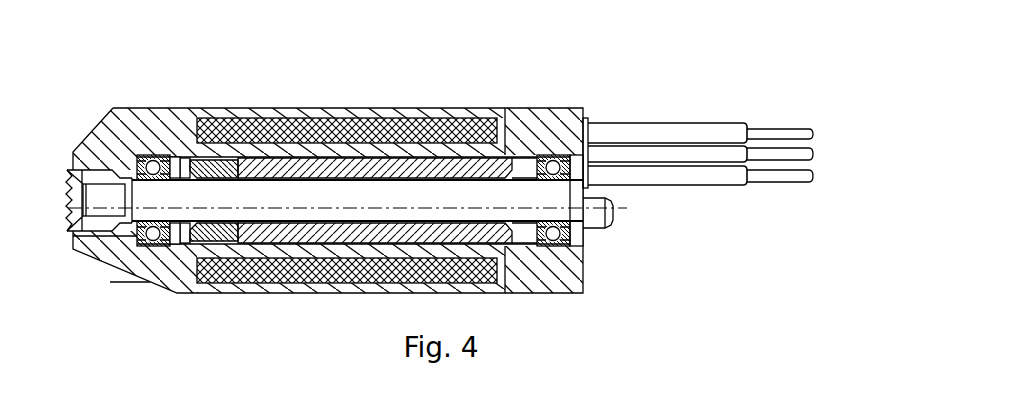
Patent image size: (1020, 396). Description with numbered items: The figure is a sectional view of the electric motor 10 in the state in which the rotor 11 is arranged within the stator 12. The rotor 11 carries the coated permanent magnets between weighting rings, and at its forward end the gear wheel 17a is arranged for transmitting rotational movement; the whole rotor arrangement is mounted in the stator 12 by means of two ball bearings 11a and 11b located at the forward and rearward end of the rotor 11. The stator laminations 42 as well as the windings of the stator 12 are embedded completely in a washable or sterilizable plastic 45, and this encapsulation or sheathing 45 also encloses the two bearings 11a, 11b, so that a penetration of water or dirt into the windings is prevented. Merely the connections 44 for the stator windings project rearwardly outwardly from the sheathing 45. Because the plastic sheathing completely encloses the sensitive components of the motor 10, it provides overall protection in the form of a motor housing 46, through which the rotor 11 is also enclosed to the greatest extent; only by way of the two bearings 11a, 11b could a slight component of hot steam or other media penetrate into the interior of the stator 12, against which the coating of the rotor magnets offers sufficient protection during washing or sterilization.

The electric motor 10 is at (447, 106).
The rotor 11 is at (340, 201).
The ball bearing 11a is at (150, 246).
The ball bearing 11b is at (565, 155).
The stator 12 is at (268, 106).
The gear wheel 17a is at (76, 234).
The stator laminations 42 is at (340, 120).
The connections 44 is at (705, 123).
The plastic sheathing 45 is at (158, 128).
The motor housing 46 is at (537, 297).